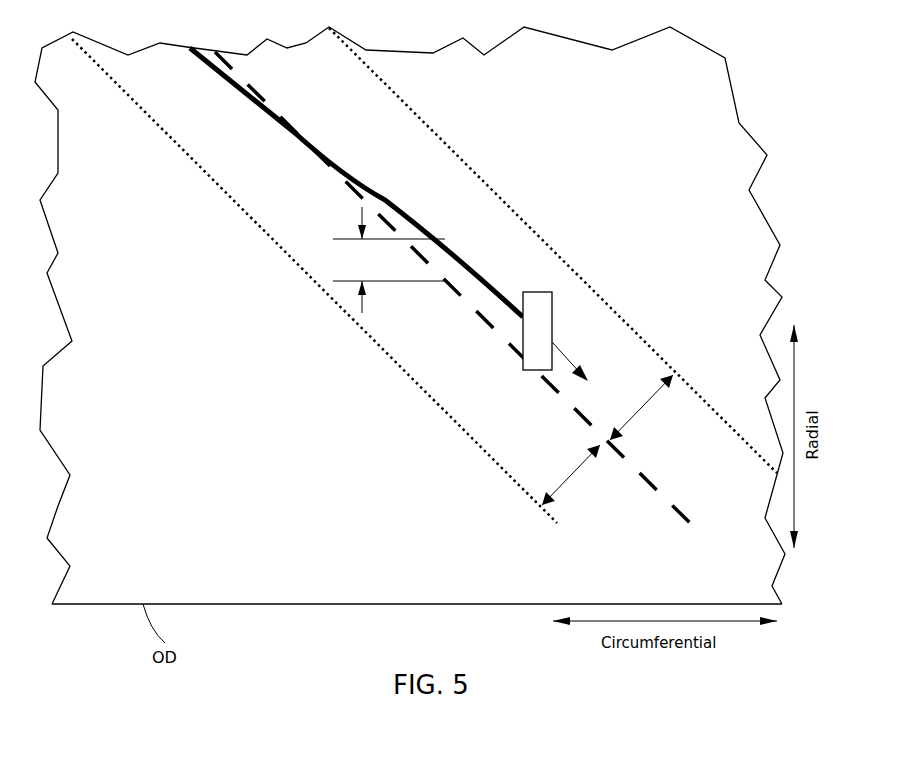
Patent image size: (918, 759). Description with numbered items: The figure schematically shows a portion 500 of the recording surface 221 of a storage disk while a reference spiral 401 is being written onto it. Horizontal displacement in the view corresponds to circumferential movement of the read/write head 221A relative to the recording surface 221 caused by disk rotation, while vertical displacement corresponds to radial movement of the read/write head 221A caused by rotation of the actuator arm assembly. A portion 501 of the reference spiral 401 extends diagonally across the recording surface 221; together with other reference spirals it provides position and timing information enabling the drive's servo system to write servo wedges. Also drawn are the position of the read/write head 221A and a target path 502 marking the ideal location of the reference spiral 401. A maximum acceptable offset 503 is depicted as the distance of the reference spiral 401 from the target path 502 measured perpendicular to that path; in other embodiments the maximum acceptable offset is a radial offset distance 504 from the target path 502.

The portion of recording surface 500 is at (433, 53).
The recording surface 221 is at (675, 122).
The read/write head 221A is at (538, 292).
The reference spiral 401 is at (356, 182).
The portion of reference spiral 501 is at (242, 100).
The target path 502 is at (256, 86).
The maximum acceptable offset 503 is at (632, 423).
The radial offset distance 504 is at (362, 305).